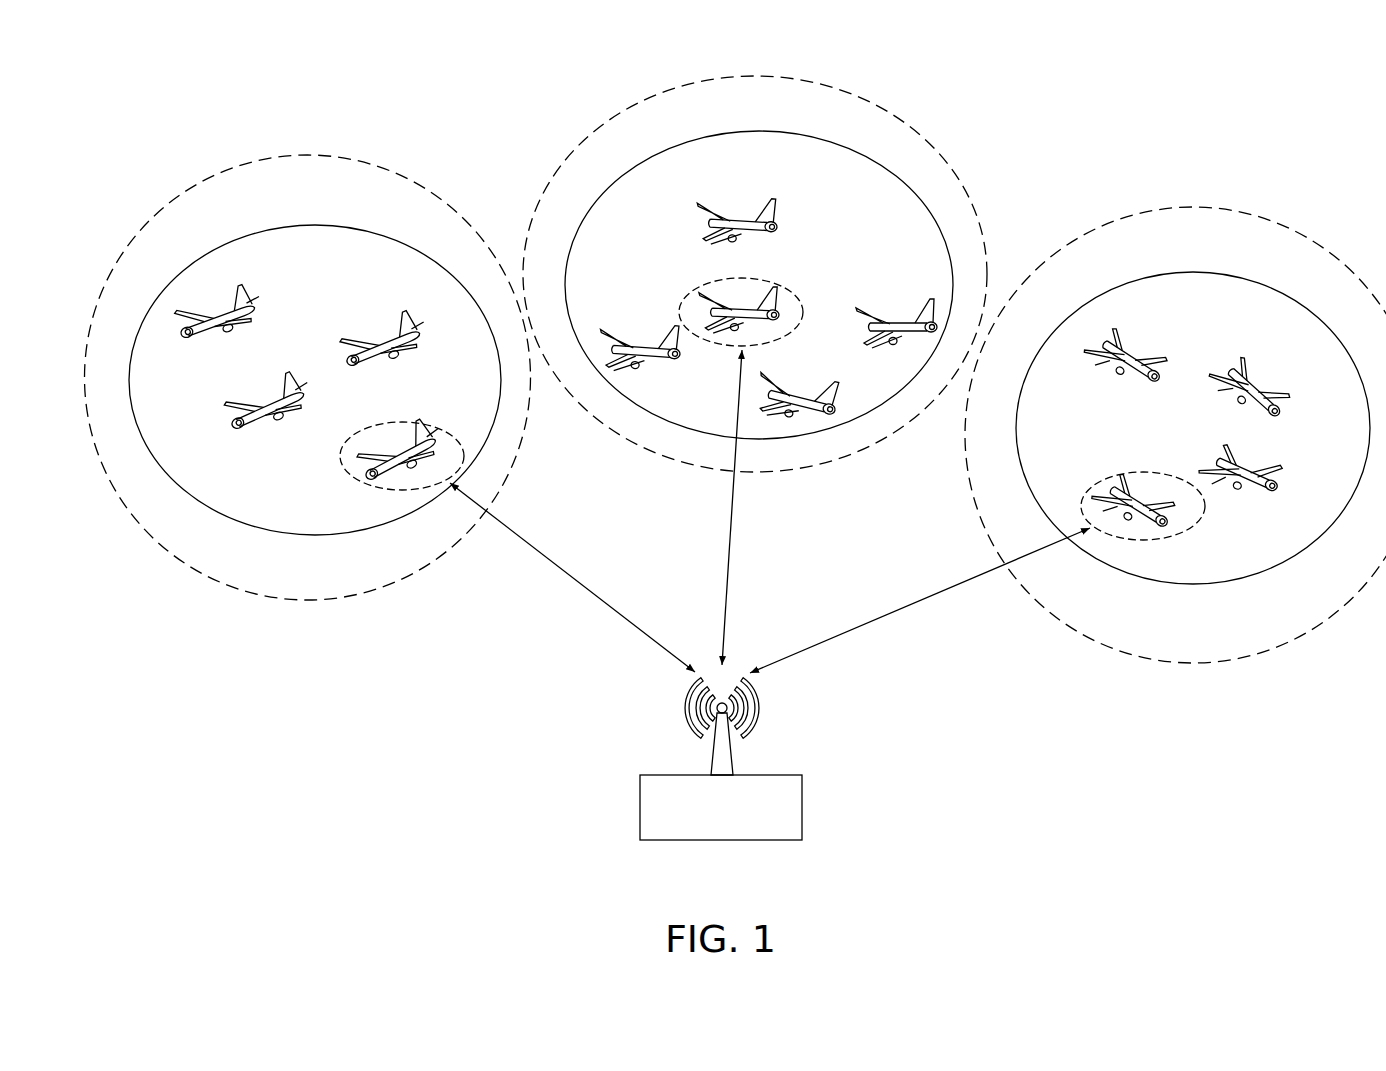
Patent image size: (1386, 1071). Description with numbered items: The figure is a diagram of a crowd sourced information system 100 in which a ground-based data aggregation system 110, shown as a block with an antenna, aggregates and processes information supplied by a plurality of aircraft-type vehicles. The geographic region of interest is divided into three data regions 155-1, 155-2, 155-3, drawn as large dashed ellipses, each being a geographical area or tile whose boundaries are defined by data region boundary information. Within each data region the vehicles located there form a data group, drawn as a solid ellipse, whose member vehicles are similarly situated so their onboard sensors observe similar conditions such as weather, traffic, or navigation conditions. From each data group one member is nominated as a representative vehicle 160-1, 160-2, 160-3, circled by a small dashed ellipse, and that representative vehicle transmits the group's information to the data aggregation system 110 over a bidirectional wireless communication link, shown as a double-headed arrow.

The crowd sourced information system 100 is at (515, 683).
The data aggregation system 110 is at (804, 812).
The data region 155-1 is at (355, 160).
The data region 155-2 is at (812, 80).
The data region 155-3 is at (1210, 207).
The representative vehicle 160-1 is at (340, 466).
The representative vehicle 160-2 is at (747, 279).
The representative vehicle 160-3 is at (1200, 513).